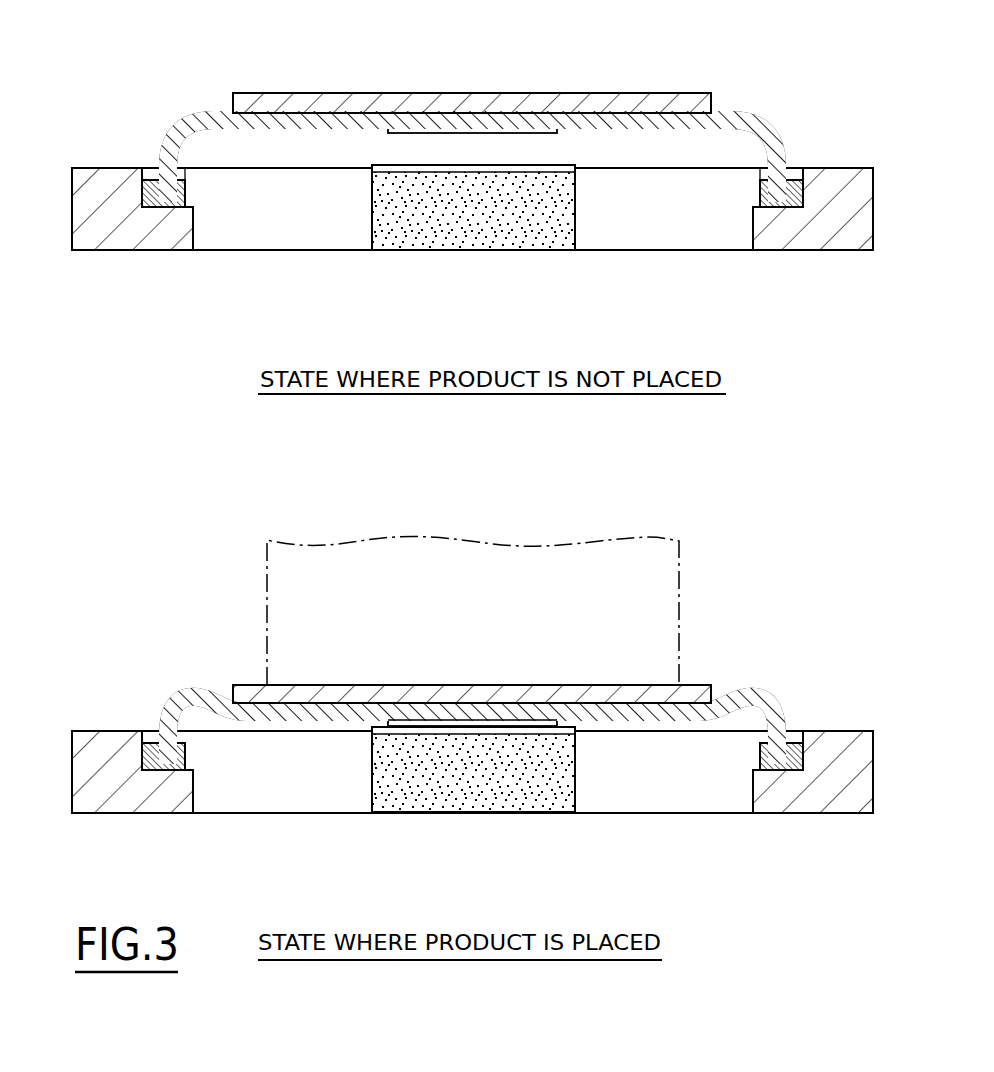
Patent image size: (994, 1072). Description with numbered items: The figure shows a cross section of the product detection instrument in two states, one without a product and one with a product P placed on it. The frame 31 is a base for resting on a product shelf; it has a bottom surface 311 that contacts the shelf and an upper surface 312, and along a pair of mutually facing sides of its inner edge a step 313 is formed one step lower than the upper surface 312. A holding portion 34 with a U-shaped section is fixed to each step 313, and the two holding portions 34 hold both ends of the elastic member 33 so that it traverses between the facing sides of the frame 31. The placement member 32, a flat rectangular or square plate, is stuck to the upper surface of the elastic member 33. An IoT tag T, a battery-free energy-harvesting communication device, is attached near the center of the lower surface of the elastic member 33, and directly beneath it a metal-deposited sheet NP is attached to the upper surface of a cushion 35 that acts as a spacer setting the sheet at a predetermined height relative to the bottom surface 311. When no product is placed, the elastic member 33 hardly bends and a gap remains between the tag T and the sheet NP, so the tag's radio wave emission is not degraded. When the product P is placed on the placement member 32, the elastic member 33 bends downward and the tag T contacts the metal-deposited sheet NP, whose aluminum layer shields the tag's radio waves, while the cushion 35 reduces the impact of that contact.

The frame 31 is at (112, 240).
The bottom surface 311 is at (92, 252).
The upper surface 312 is at (96, 167).
The step 313 is at (148, 163).
The placement member 32 is at (513, 100).
The elastic member 33 is at (200, 113).
The holding portion 34 is at (187, 184).
The cushion 35 is at (470, 222).
The metal-deposited sheet NP is at (376, 162).
The IoT tag T is at (548, 135).
The product P is at (679, 590).